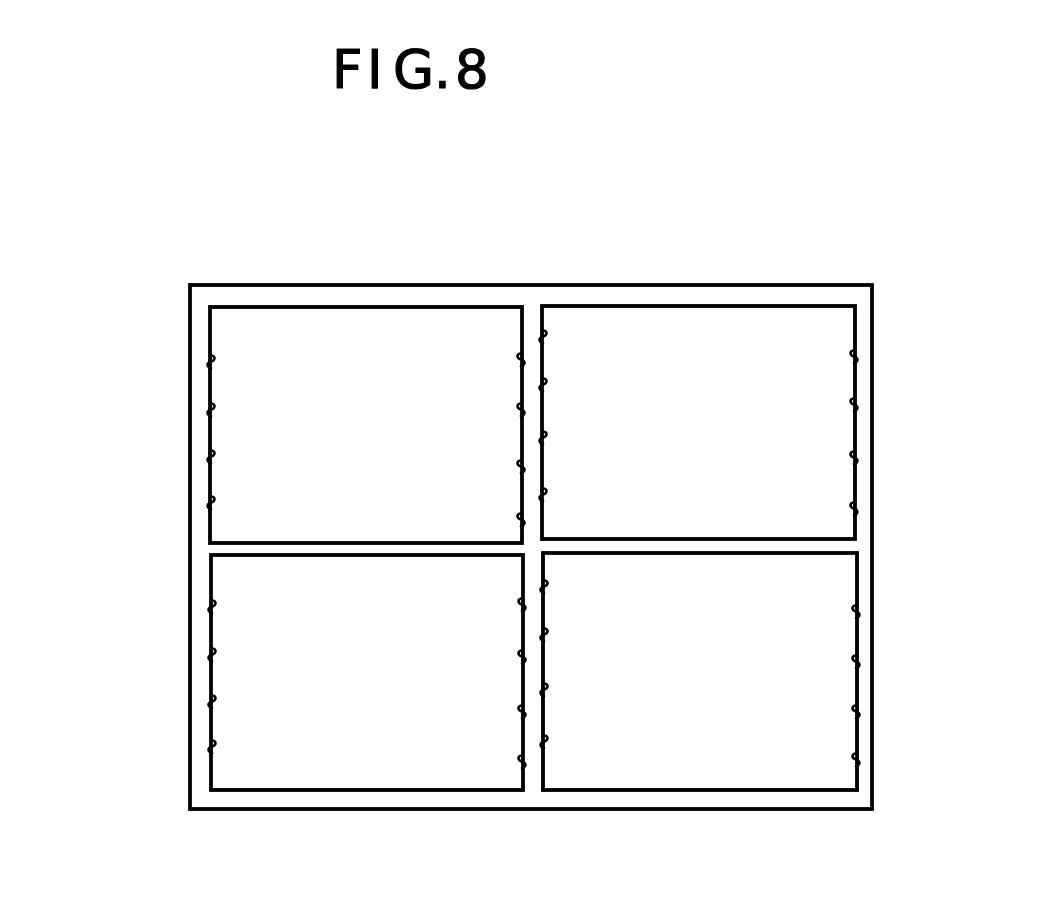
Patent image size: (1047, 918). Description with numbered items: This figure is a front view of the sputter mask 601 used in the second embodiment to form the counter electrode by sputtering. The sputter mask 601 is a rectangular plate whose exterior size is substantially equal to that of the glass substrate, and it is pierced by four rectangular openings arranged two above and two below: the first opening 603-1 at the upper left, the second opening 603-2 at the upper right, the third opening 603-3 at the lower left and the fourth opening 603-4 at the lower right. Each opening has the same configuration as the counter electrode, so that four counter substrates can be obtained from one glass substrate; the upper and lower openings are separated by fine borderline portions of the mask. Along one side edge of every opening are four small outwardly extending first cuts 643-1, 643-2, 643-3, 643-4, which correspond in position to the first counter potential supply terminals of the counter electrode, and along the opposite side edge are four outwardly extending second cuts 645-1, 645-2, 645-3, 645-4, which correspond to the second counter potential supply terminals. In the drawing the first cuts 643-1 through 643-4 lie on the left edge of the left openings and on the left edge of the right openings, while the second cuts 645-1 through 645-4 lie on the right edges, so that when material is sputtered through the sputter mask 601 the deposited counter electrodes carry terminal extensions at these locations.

The sputter mask 601 is at (592, 222).
The first opening 603-1 is at (358, 348).
The second opening 603-2 is at (740, 322).
The third opening 603-3 is at (393, 773).
The fourth opening 603-4 is at (753, 763).
The first cut 643-1 is at (210, 364).
The first cut 643-2 is at (210, 412).
The first cut 643-3 is at (210, 457).
The first cut 643-4 is at (210, 503).
The second cut 645-1 is at (522, 360).
The second cut 645-2 is at (522, 410).
The second cut 645-3 is at (523, 467).
The second cut 645-4 is at (522, 520).